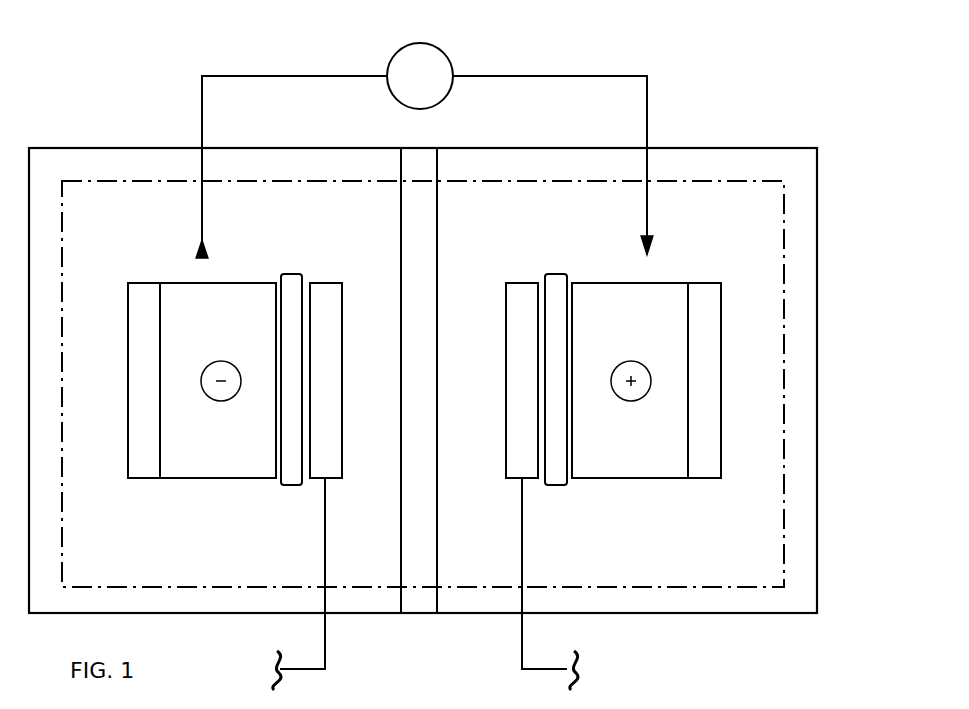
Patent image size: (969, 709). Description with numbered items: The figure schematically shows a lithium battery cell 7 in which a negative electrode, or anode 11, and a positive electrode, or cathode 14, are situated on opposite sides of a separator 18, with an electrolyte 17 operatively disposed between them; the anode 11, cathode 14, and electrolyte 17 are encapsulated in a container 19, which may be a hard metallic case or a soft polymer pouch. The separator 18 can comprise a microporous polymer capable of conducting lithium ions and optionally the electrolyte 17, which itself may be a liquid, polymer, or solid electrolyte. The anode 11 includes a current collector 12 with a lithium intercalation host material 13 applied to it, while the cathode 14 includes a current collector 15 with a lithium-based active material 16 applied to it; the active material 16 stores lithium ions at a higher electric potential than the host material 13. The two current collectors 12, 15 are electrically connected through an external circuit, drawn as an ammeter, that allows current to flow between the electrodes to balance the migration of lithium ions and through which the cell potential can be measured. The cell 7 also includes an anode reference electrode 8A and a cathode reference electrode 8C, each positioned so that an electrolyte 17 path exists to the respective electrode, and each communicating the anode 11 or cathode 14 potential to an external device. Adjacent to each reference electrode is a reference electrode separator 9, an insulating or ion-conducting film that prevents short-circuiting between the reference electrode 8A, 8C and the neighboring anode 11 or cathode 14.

The lithium battery cell 7 is at (780, 118).
The anode reference electrode 8A is at (324, 389).
The cathode reference electrode 8C is at (520, 389).
The reference electrode separator 9 is at (292, 483).
The negative electrode (anode) 11 is at (174, 427).
The current collector 12 is at (200, 473).
The lithium intercalation host material 13 is at (146, 385).
The positive electrode (cathode) 14 is at (674, 427).
The current collector 15 is at (653, 473).
The lithium-based active material 16 is at (704, 390).
The electrolyte 17 is at (377, 525).
The separator 18 is at (428, 245).
The container 19 is at (818, 401).